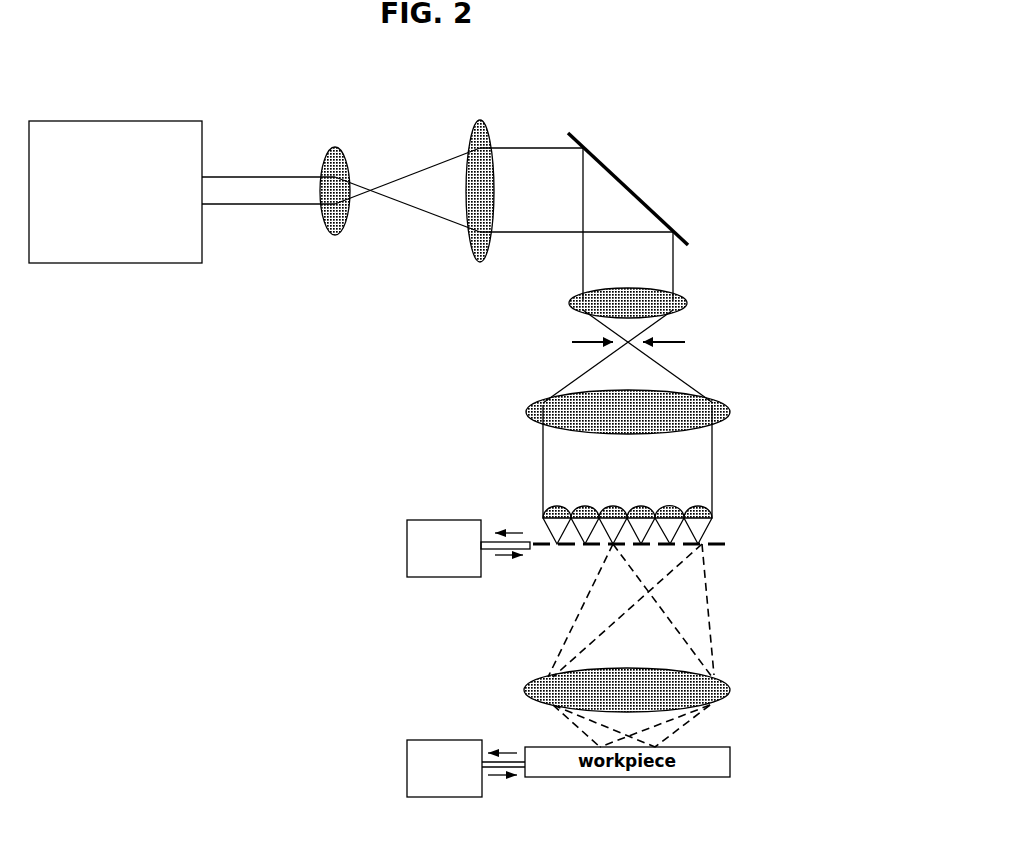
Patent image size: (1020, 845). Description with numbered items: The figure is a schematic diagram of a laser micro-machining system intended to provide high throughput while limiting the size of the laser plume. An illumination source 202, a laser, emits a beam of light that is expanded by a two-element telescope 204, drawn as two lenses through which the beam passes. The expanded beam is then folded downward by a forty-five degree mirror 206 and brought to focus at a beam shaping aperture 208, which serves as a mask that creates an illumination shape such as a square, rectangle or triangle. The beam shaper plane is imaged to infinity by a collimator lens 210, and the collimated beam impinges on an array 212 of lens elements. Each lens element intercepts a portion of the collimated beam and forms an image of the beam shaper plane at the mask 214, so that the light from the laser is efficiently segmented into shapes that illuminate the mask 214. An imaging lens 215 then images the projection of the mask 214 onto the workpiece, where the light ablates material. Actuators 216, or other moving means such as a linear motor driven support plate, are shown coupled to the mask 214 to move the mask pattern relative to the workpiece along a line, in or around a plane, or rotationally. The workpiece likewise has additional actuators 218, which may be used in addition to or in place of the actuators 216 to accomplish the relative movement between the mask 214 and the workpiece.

The illumination source 202 is at (115, 192).
The 2-element telescope 204 is at (407, 174).
The 45 degree mirror 206 is at (655, 189).
The beam shaping aperture 208 is at (679, 344).
The collimator lens 210 is at (689, 409).
The array of lens elements 212 is at (672, 501).
The mask 214 is at (667, 561).
The imaging lens 215 is at (721, 690).
The actuator 216 is at (468, 548).
The additional actuator 218 is at (466, 768).